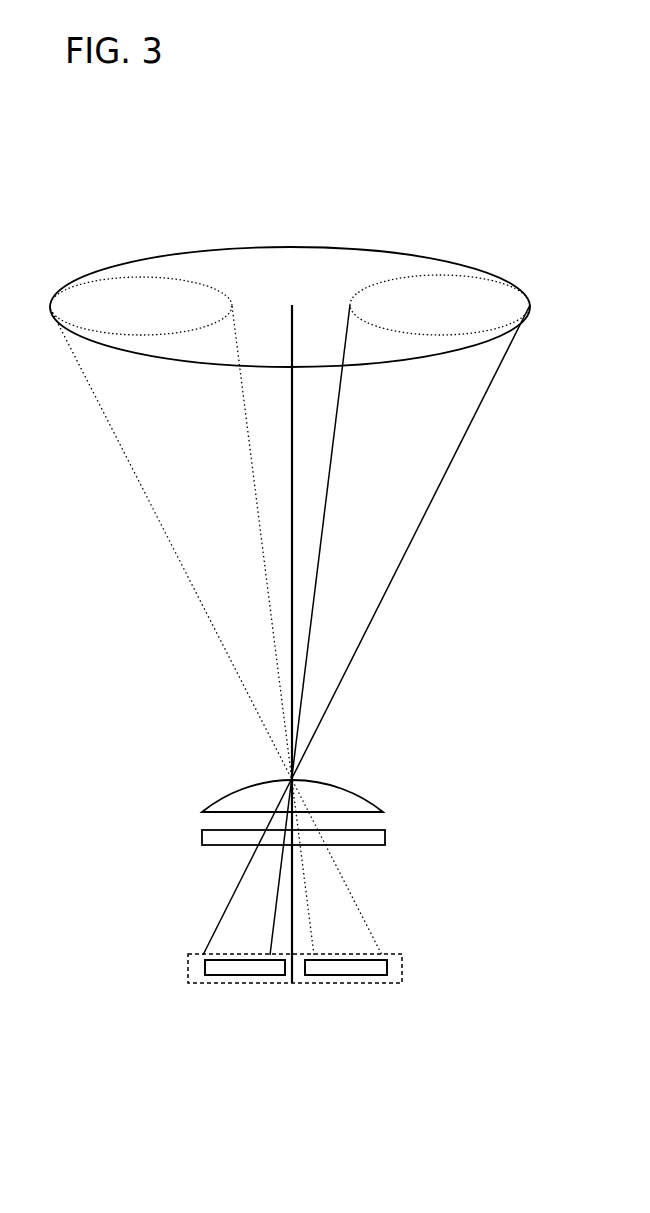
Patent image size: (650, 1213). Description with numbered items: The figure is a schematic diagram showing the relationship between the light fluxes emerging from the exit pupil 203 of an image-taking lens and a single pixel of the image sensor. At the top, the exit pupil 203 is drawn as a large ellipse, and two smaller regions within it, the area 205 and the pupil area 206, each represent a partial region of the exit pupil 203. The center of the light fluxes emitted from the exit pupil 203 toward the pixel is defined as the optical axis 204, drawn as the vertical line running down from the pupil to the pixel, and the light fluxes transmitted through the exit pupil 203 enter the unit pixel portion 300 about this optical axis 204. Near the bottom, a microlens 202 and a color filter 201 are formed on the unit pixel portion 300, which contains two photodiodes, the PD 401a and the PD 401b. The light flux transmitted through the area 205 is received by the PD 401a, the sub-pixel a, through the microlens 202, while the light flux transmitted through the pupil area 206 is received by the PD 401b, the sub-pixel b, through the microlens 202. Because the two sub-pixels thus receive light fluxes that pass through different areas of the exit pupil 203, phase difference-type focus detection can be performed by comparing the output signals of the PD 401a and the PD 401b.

The color filter 201 is at (202, 833).
The microlens 202 is at (250, 784).
The exit pupil 203 is at (182, 250).
The optical axis 204 is at (302, 330).
The area 205 is at (433, 275).
The pupil area 206 is at (127, 262).
The unit pixel portion 300 is at (273, 985).
The PD 401a is at (210, 983).
The PD 401b is at (367, 975).